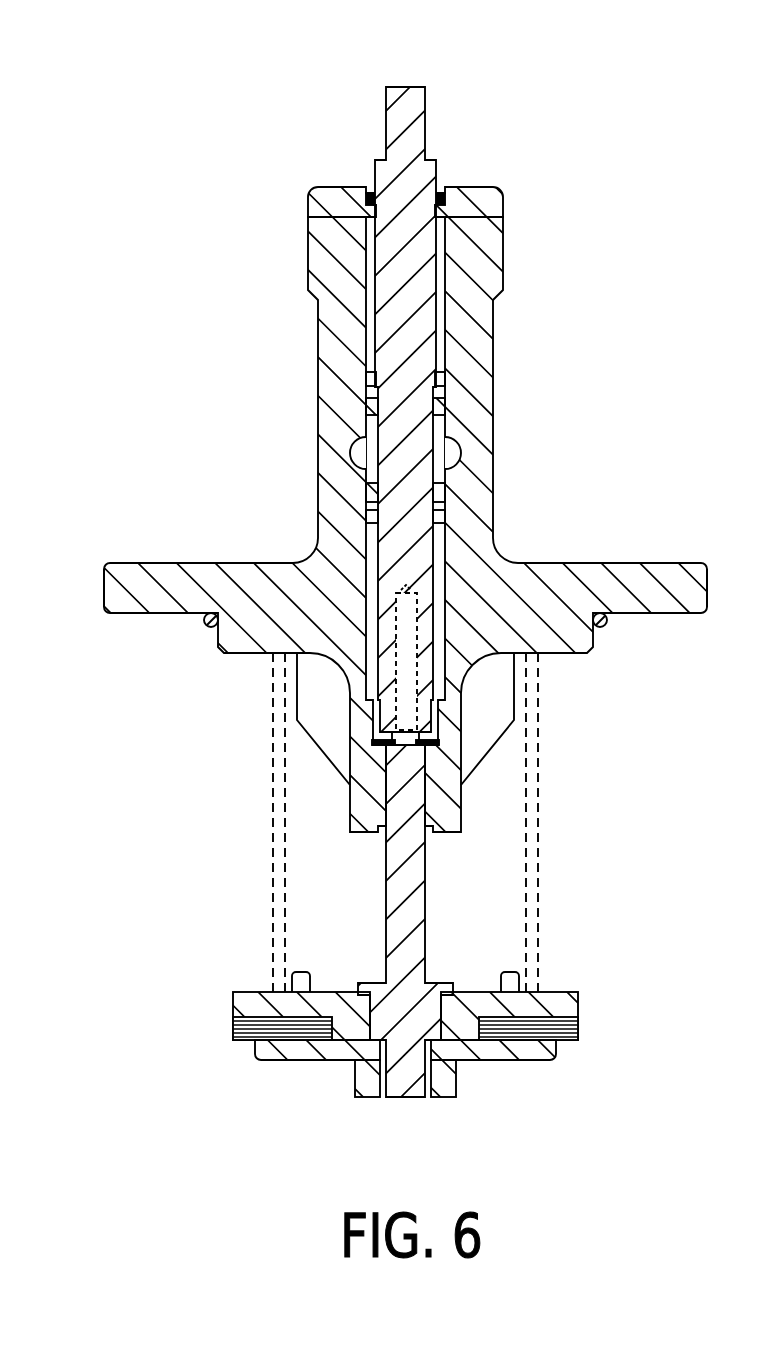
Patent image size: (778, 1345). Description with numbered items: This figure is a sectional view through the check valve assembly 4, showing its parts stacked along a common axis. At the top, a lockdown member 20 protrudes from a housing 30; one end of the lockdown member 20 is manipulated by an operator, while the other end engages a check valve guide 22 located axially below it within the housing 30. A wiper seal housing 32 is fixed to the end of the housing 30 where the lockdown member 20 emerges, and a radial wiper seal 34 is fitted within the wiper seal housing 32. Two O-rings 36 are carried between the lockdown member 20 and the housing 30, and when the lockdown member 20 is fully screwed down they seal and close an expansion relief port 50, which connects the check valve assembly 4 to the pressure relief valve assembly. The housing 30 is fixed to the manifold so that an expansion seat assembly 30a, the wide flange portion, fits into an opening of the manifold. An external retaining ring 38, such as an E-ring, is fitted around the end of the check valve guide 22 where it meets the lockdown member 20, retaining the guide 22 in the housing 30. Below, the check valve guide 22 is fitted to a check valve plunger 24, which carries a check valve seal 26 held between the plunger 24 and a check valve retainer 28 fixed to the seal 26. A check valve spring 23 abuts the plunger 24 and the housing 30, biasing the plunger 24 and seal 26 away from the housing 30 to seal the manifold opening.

The check valve assembly 4 is at (153, 340).
The lockdown member 20 is at (430, 85).
The check valve guide 22 is at (428, 912).
The check valve spring 23 is at (540, 757).
The check valve plunger 24 is at (232, 992).
The check valve seal 26 is at (583, 1028).
The check valve retainer 28 is at (262, 1060).
The housing 30 is at (492, 420).
The expansion seat assembly 30a is at (118, 562).
The wiper seal housing 32 is at (500, 187).
The radial wiper seal 34 is at (364, 190).
The O-rings 36 is at (366, 495).
The external retaining ring 38 is at (370, 745).
The expansion relief port 50 is at (457, 455).